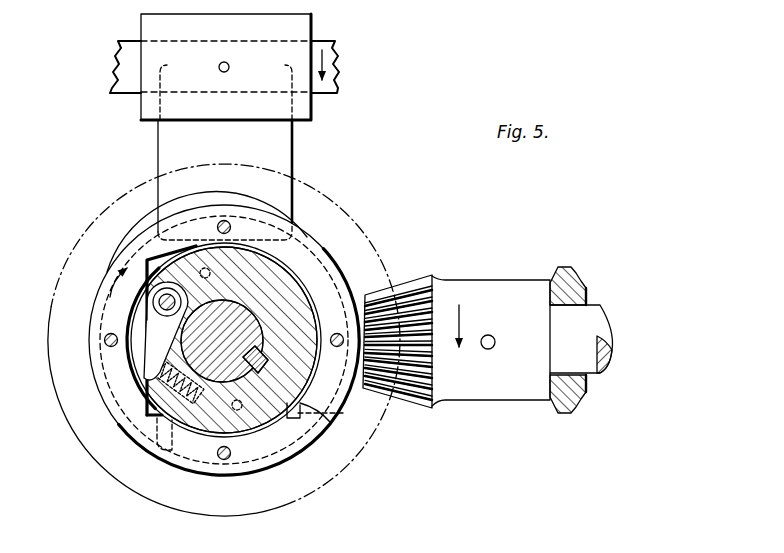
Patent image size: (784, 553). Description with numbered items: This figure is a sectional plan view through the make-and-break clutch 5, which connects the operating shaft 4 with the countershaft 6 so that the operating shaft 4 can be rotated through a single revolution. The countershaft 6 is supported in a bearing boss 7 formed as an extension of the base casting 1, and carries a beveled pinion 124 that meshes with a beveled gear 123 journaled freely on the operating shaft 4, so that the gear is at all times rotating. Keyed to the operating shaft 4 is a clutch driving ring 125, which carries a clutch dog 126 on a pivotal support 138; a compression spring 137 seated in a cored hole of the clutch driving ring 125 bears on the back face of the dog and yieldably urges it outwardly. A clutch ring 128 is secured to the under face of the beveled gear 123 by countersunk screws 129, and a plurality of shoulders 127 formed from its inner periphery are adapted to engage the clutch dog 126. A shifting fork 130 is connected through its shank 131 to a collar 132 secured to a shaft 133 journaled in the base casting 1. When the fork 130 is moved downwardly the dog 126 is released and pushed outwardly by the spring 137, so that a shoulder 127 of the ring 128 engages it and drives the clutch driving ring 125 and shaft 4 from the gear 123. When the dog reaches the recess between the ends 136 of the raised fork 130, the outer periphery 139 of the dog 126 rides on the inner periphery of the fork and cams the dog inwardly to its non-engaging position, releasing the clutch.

The base casting 1 is at (573, 268).
The operating shaft 4 is at (253, 328).
The make-and-break clutch 5 is at (112, 421).
The countershaft 6 is at (600, 310).
The bearing boss 7 is at (588, 290).
The beveled gear 123 is at (68, 258).
The beveled pinion 124 is at (413, 275).
The clutch driving ring 125 is at (263, 414).
The clutch dog 126 is at (150, 350).
The shoulders 127 is at (147, 268).
The clutch ring 128 is at (308, 446).
The countersunk screws 129 is at (222, 460).
The shifting fork 130 is at (323, 250).
The shank 131 is at (290, 147).
The collar 132 is at (145, 105).
The shaft 133 is at (122, 55).
The ends of the fork 136 is at (170, 452).
The compression spring 137 is at (184, 400).
The pivotal support 138 is at (155, 304).
The outer periphery of the dog 139 is at (147, 313).